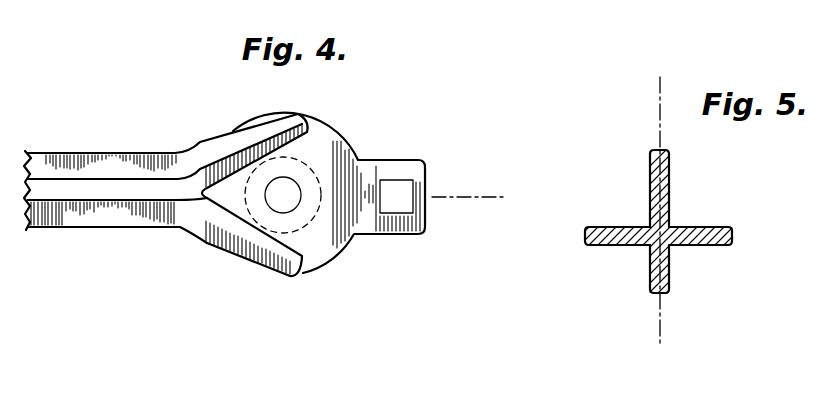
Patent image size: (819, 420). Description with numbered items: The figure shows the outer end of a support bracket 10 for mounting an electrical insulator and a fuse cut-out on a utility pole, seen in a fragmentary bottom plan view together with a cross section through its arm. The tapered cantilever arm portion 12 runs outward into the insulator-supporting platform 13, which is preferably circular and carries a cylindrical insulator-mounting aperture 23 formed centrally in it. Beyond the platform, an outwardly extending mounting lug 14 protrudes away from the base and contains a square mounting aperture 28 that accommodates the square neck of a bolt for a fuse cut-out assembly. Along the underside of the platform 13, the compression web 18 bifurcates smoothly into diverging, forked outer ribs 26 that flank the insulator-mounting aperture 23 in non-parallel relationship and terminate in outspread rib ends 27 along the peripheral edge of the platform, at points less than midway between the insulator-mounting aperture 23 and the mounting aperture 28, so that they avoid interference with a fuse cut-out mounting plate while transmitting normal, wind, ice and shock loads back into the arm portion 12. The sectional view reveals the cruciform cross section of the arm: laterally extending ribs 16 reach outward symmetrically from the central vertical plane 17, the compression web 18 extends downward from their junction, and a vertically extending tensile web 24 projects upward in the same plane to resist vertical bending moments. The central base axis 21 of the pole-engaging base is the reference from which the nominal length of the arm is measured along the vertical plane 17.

In FIG. 4, the support bracket 10 is at (88, 146).
In FIG. 4, the cantilever arm portion 12 is at (133, 175).
In FIG. 5, the cantilever arm portion 12 is at (685, 208).
In FIG. 4, the insulator-supporting platform 13 is at (350, 130).
In FIG. 4, the mounting lug 14 is at (434, 178).
In FIG. 4, the laterally extending ribs 16 is at (43, 154).
In FIG. 5, the laterally extending ribs 16 is at (610, 245).
In FIG. 4, the central vertical plane 17 is at (482, 198).
In FIG. 5, the central vertical plane 17 is at (658, 125).
In FIG. 4, the compression web 18 is at (73, 191).
In FIG. 5, the compression web 18 is at (670, 280).
In FIG. 4, the central base axis 21 is at (0, 373).
In FIG. 4, the insulator-mounting aperture 23 is at (292, 187).
In FIG. 5, the tensile web 24 is at (670, 165).
In FIG. 4, the forked outer ribs 26 is at (258, 142).
In FIG. 4, the rib ends 27 is at (305, 122).
In FIG. 4, the mounting aperture 28 is at (402, 182).